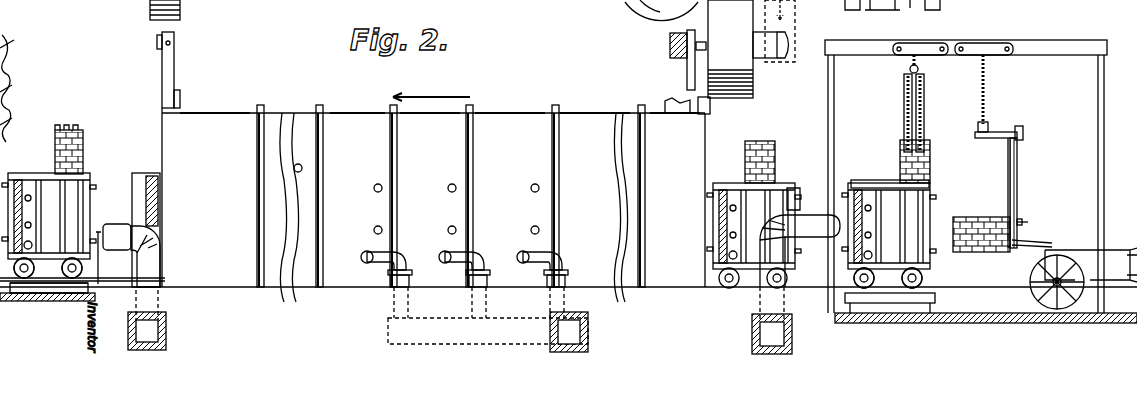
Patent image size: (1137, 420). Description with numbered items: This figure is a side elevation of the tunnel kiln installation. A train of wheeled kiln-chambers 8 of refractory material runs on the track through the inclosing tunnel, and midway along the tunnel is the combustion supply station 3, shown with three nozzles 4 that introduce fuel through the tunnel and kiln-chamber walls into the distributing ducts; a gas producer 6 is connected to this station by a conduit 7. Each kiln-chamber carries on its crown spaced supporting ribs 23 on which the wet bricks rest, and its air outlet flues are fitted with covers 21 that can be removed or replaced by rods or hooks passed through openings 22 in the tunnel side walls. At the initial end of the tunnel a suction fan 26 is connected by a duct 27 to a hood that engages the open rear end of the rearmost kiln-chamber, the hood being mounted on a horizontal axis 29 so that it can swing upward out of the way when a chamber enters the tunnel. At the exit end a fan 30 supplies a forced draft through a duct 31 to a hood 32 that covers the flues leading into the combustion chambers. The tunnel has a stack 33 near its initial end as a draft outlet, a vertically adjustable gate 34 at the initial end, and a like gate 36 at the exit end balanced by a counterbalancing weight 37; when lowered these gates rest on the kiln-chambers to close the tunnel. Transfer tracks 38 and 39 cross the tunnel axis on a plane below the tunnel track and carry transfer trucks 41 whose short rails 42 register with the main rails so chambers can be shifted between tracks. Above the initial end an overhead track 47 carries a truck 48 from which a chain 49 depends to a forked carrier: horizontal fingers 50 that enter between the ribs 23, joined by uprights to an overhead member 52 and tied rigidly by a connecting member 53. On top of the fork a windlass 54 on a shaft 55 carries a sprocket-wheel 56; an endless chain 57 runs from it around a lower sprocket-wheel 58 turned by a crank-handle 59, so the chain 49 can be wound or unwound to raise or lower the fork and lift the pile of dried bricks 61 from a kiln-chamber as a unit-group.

The combustion supply station 3 is at (430, 338).
The nozzles 4 is at (380, 257).
The gas producer 6 is at (625, 0).
The conduit 7 is at (582, 320).
The kiln-chambers 8 is at (931, 218).
The covers 21 is at (48, 172).
The openings 22 is at (299, 163).
The supporting ribs 23 is at (83, 173).
The suction fan 26 is at (753, 84).
The duct 27 is at (786, 333).
The horizontal axis 29 is at (822, 214).
The fan 30 is at (152, 18).
The duct 31 is at (160, 330).
The hood 32 is at (114, 225).
The stack 33 is at (667, 100).
The gate 34 is at (711, 106).
The gate 36 is at (164, 72).
The counterbalancing weight 37 is at (180, 101).
The transfer track 38 is at (935, 303).
The transfer track 39 is at (12, 300).
The transfer trucks 41 is at (42, 296).
The rails 42 is at (50, 280).
The overhead track 47 is at (1060, 50).
The truck 48 is at (992, 50).
The chain 49 is at (991, 92).
The fingers 50 is at (985, 253).
The overhead member 52 is at (1005, 142).
The connecting member 53 is at (966, 130).
The windlass 54 is at (978, 128).
The shaft 55 is at (1005, 131).
The sprocket-wheel 56 is at (1023, 131).
The endless chain 57 is at (1018, 166).
The lower sprocket-wheel 58 is at (1016, 240).
The crank-handle 59 is at (1024, 220).
The pile of dried bricks 61 is at (930, 172).